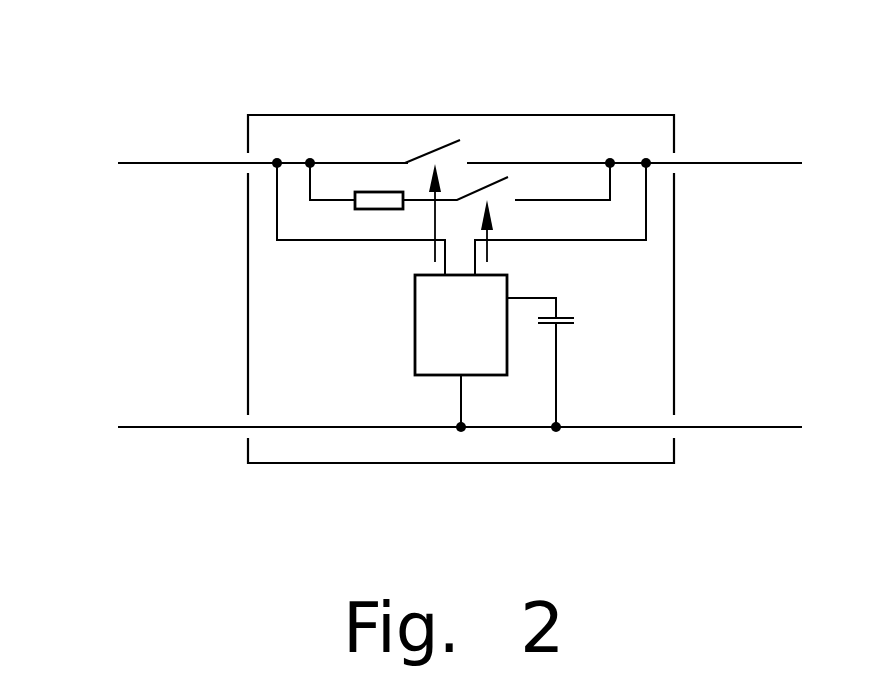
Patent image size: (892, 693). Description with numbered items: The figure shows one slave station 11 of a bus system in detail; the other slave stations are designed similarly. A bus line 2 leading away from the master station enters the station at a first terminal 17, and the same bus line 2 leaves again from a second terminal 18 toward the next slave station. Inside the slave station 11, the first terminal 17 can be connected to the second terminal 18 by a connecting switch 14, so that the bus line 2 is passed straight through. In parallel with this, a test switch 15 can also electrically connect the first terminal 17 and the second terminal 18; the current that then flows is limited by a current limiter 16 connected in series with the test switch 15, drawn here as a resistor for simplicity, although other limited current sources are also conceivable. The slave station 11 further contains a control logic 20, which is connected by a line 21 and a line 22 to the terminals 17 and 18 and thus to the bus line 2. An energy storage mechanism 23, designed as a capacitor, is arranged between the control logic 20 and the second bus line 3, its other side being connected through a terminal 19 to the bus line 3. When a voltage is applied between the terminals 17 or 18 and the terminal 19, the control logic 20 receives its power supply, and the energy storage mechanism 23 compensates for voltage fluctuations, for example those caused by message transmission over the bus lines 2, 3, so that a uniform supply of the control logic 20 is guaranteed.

The bus line 2 is at (155, 163).
The bus line 3 is at (155, 426).
The slave station 11 is at (302, 115).
The connecting switch 14 is at (442, 148).
The test switch 15 is at (500, 182).
The current limiter 16 is at (377, 197).
The first terminal 17 is at (247, 158).
The second terminal 18 is at (673, 157).
The terminal 19 is at (459, 432).
The control logic 20 is at (432, 350).
The line 21 is at (323, 242).
The line 22 is at (647, 218).
The energy storage mechanism 23 is at (567, 313).